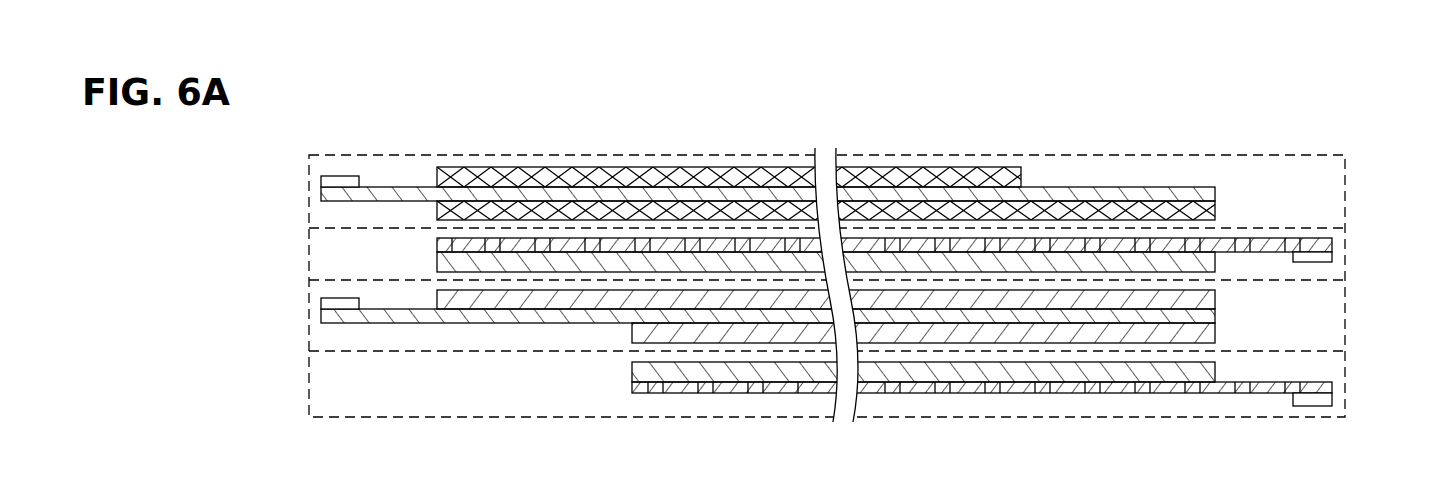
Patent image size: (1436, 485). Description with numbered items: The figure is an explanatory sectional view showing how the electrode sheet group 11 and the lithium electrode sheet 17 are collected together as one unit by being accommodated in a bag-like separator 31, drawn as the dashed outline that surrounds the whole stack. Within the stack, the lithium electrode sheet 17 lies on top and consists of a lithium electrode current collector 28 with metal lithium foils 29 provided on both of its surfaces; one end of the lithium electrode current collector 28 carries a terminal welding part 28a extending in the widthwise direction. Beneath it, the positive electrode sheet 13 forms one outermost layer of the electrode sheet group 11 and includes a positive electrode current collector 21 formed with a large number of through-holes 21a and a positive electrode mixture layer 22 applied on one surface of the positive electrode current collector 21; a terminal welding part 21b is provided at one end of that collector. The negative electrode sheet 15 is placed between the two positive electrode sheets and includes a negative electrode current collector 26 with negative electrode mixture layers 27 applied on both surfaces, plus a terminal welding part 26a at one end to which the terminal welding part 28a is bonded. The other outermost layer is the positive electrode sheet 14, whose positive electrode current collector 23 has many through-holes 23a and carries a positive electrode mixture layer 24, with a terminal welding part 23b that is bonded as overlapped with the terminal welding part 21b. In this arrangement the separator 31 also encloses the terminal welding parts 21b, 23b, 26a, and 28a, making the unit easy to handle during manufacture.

The electrode sheet group 11 is at (345, 383).
The positive electrode sheet 13 is at (813, 199).
The positive electrode sheet 14 is at (1021, 423).
The negative electrode sheet 15 is at (847, 318).
The lithium electrode sheet 17 is at (737, 151).
The positive electrode current collector 21 is at (437, 245).
The through-holes 21a is at (645, 248).
The terminal welding part 21b is at (1320, 257).
The positive electrode mixture layer 22 is at (437, 260).
The positive electrode current collector 23 is at (673, 376).
The through-holes 23a is at (740, 393).
The terminal welding part 23b is at (1320, 400).
The positive electrode mixture layer 24 is at (660, 387).
The negative electrode current collector 26 is at (1210, 315).
The terminal welding part 26a is at (326, 304).
The negative electrode mixture layers 27 is at (1210, 298).
The lithium electrode current collector 28 is at (965, 193).
The terminal welding part 28a is at (326, 182).
The metal lithium foils 29 is at (938, 176).
The separator 31 is at (1292, 151).